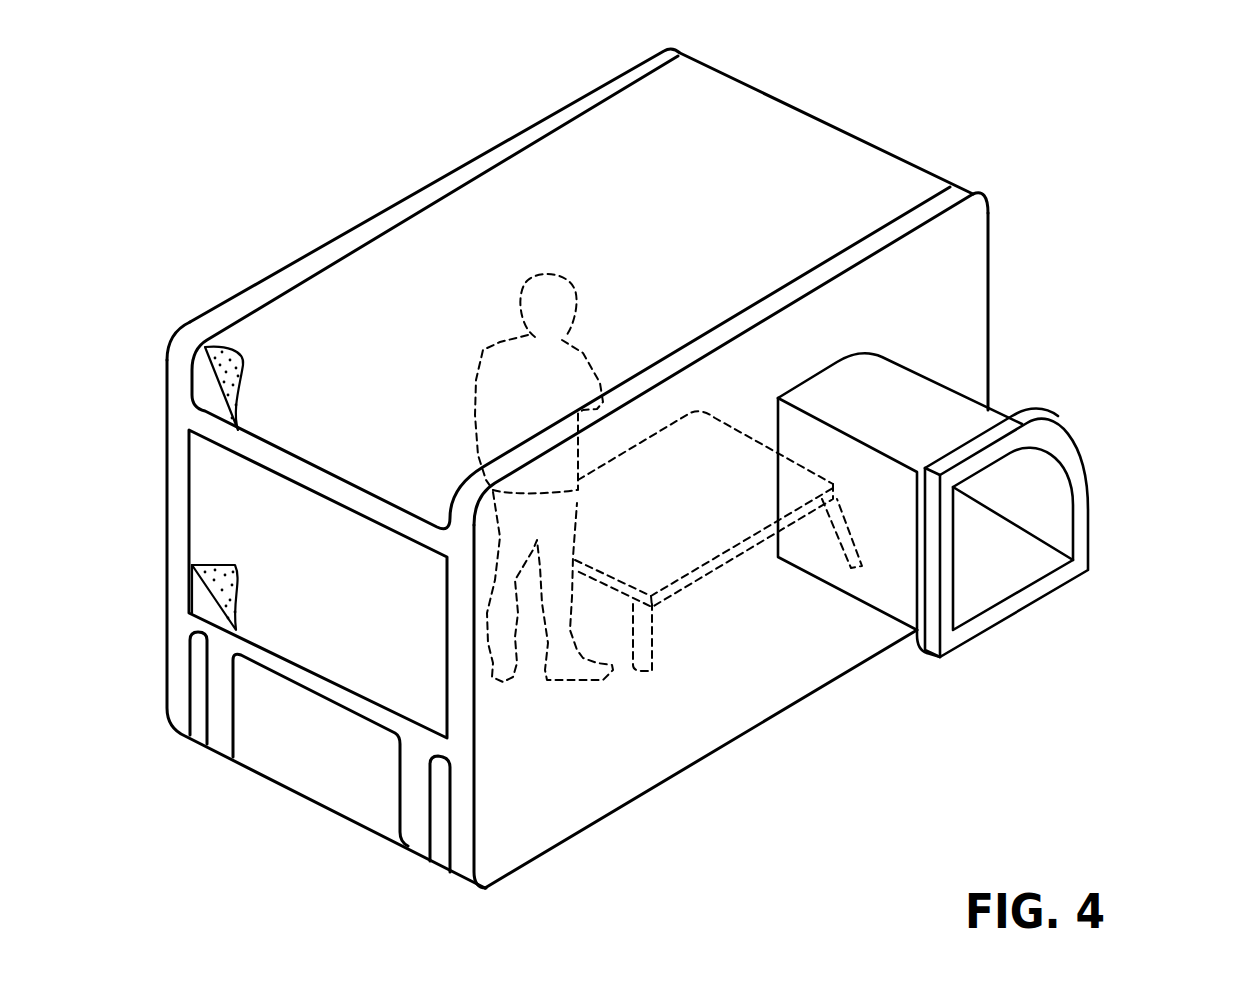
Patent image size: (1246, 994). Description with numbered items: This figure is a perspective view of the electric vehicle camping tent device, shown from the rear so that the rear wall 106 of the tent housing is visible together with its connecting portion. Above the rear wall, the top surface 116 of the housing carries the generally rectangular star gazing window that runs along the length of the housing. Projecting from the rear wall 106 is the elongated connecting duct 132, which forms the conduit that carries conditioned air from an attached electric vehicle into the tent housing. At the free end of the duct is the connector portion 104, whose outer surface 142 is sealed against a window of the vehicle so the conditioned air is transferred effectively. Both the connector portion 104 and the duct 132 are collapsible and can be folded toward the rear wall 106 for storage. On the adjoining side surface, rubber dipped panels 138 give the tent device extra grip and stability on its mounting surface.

The connector portion 104 is at (943, 633).
The rear wall 106 is at (665, 705).
The top surface 116 is at (946, 205).
The connecting duct 132 is at (962, 414).
The rubber dipped panels 138 is at (277, 720).
The outer surface 142 is at (1090, 530).